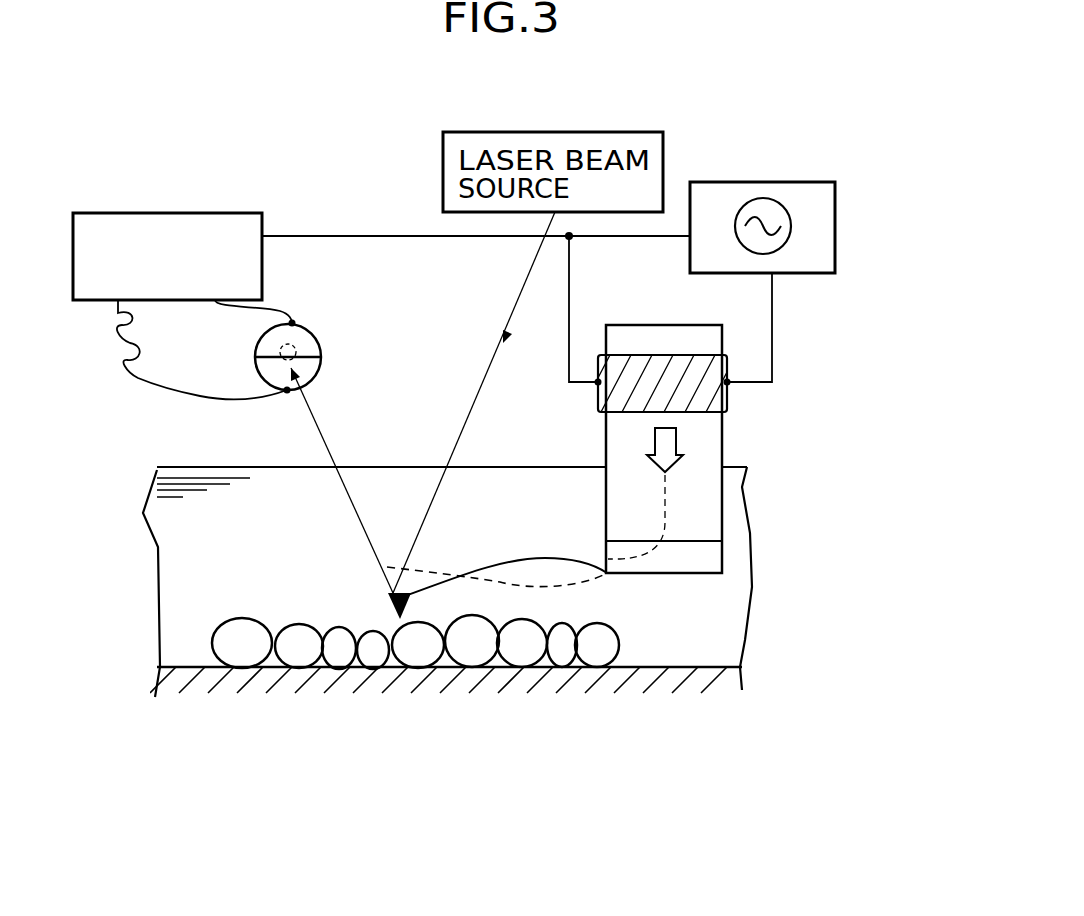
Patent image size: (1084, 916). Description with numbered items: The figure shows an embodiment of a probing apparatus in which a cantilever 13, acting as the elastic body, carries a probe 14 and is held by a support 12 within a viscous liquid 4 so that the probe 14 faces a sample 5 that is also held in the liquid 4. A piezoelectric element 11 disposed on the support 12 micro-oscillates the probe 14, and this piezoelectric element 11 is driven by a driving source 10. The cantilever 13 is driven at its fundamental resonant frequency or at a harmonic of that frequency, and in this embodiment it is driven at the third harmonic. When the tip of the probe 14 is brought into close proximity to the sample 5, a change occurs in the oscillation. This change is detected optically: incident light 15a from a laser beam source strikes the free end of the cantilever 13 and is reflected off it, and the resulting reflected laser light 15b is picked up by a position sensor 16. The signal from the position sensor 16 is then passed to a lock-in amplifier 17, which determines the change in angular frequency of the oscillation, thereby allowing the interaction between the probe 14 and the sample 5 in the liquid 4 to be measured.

The liquid 4 is at (260, 488).
The sample 5 is at (238, 620).
The driving source 10 is at (760, 182).
The piezoelectric element 11 is at (712, 400).
The support 12 is at (708, 523).
The cantilever 13 is at (510, 560).
The probe 14 is at (390, 606).
The incident light 15a is at (488, 387).
The reflected laser light 15b is at (330, 443).
The position sensor 16 is at (318, 345).
The lock-in amplifier 17 is at (183, 213).